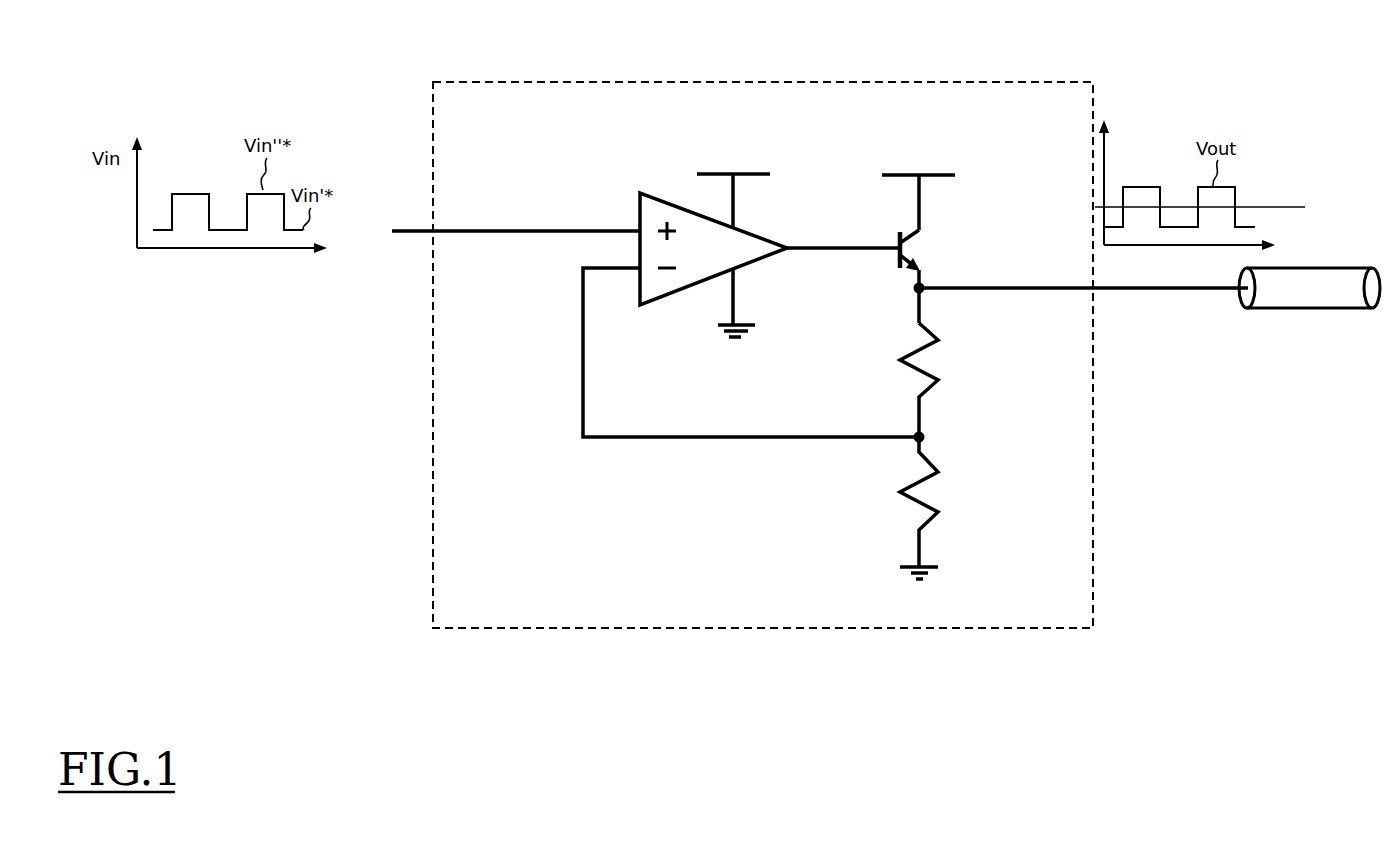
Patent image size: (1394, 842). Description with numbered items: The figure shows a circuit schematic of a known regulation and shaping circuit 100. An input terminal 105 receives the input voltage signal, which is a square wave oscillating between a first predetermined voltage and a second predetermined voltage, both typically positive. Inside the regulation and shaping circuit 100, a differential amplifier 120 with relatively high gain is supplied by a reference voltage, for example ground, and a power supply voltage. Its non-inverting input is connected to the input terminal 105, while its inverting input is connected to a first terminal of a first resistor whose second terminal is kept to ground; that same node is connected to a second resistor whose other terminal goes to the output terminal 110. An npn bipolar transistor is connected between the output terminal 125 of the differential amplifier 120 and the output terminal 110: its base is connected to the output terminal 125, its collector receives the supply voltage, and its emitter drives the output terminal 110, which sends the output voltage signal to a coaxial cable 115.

The regulation and shaping circuit 100 is at (742, 320).
The input terminal 105 is at (408, 230).
The output terminal 110 is at (1201, 291).
The coaxial cable 115 is at (1339, 310).
The differential amplifier 120 is at (650, 197).
The output terminal of the differential amplifier 125 is at (804, 254).